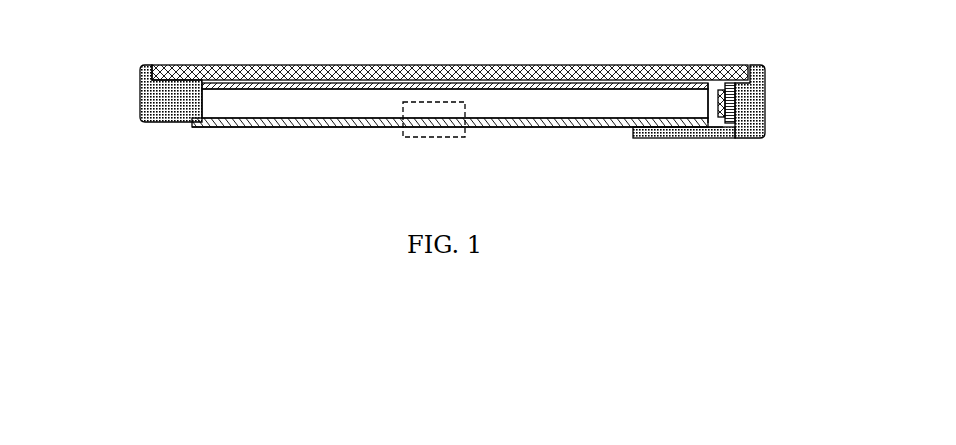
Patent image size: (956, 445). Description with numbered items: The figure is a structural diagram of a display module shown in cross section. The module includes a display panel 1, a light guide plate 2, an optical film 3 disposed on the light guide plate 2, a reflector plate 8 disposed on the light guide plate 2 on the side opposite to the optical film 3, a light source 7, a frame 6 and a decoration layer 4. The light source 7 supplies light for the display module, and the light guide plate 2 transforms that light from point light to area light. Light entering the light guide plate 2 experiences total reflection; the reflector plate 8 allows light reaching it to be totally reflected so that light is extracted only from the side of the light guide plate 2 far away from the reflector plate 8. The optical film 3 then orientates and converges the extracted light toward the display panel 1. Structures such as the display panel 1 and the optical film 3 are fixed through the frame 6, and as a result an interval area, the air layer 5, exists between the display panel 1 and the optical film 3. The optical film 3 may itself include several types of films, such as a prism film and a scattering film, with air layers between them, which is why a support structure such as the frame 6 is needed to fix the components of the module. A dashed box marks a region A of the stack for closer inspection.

The display panel 1 is at (720, 65).
The light guide plate 2 is at (580, 98).
The optical film 3 is at (600, 85).
The decoration layer 4 is at (540, 123).
The air layer 5 is at (513, 70).
The frame 6 is at (143, 88).
The light source 7 is at (745, 135).
The reflector plate 8 is at (247, 125).
The detail region A is at (447, 137).